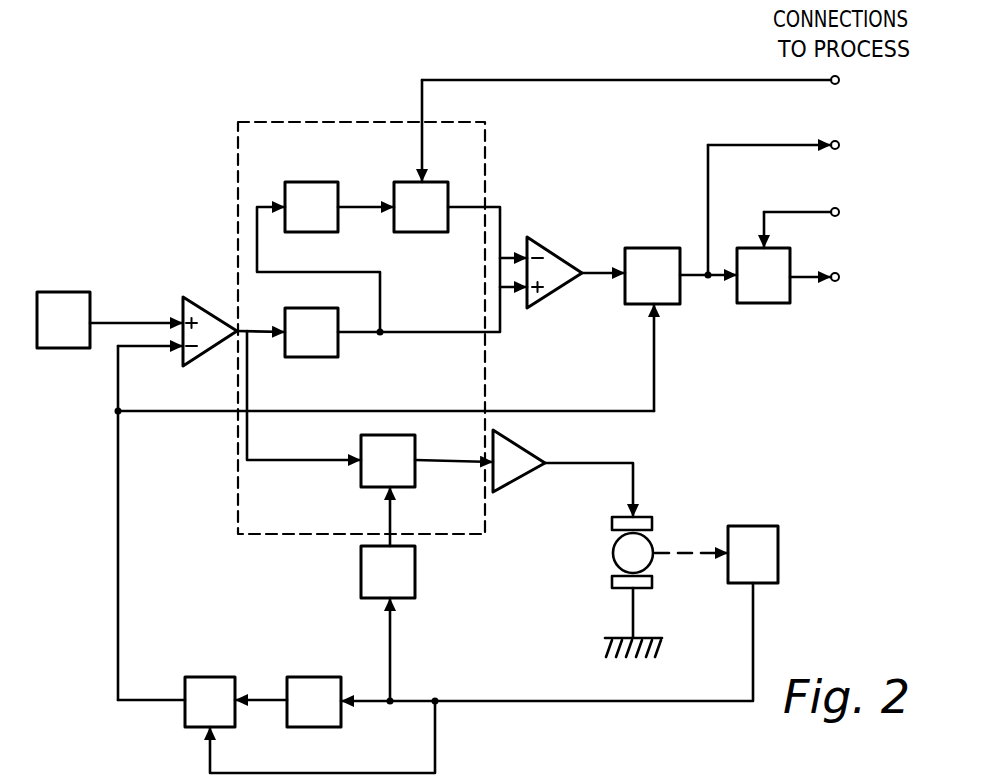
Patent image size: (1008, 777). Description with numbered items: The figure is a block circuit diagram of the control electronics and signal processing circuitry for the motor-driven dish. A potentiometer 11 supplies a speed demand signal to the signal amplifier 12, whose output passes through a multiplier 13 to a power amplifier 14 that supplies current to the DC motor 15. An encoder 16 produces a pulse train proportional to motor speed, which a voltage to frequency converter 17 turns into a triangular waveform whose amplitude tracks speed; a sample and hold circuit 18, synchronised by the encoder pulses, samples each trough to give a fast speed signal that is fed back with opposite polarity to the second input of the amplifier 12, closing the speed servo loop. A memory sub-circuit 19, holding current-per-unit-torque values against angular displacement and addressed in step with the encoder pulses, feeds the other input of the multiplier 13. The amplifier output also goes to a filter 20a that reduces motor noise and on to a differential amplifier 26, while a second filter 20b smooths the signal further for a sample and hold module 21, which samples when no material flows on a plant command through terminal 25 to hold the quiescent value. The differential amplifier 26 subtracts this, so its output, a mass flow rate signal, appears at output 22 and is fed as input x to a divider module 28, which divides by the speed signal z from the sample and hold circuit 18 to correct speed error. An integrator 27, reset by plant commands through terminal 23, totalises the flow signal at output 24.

The potentiometer 11 is at (70, 317).
The signal amplifier 12 is at (205, 330).
The multiplier 13 is at (372, 478).
The power amplifier 14 is at (515, 465).
The DC motor 15 is at (623, 553).
The encoder 16 is at (770, 563).
The voltage to frequency converter 17 is at (308, 688).
The sample and hold circuit 18 is at (190, 715).
The memory sub-circuit 19 is at (410, 585).
The filter 20a is at (318, 347).
The filter 20b is at (312, 193).
The sample and hold module 21 is at (440, 197).
The output 22 is at (794, 145).
The terminal 23 is at (822, 212).
The output 24 is at (835, 277).
The terminal 25 is at (651, 80).
The differential amplifier 26 is at (553, 277).
The integrator 27 is at (772, 292).
The divider module 28 is at (665, 287).